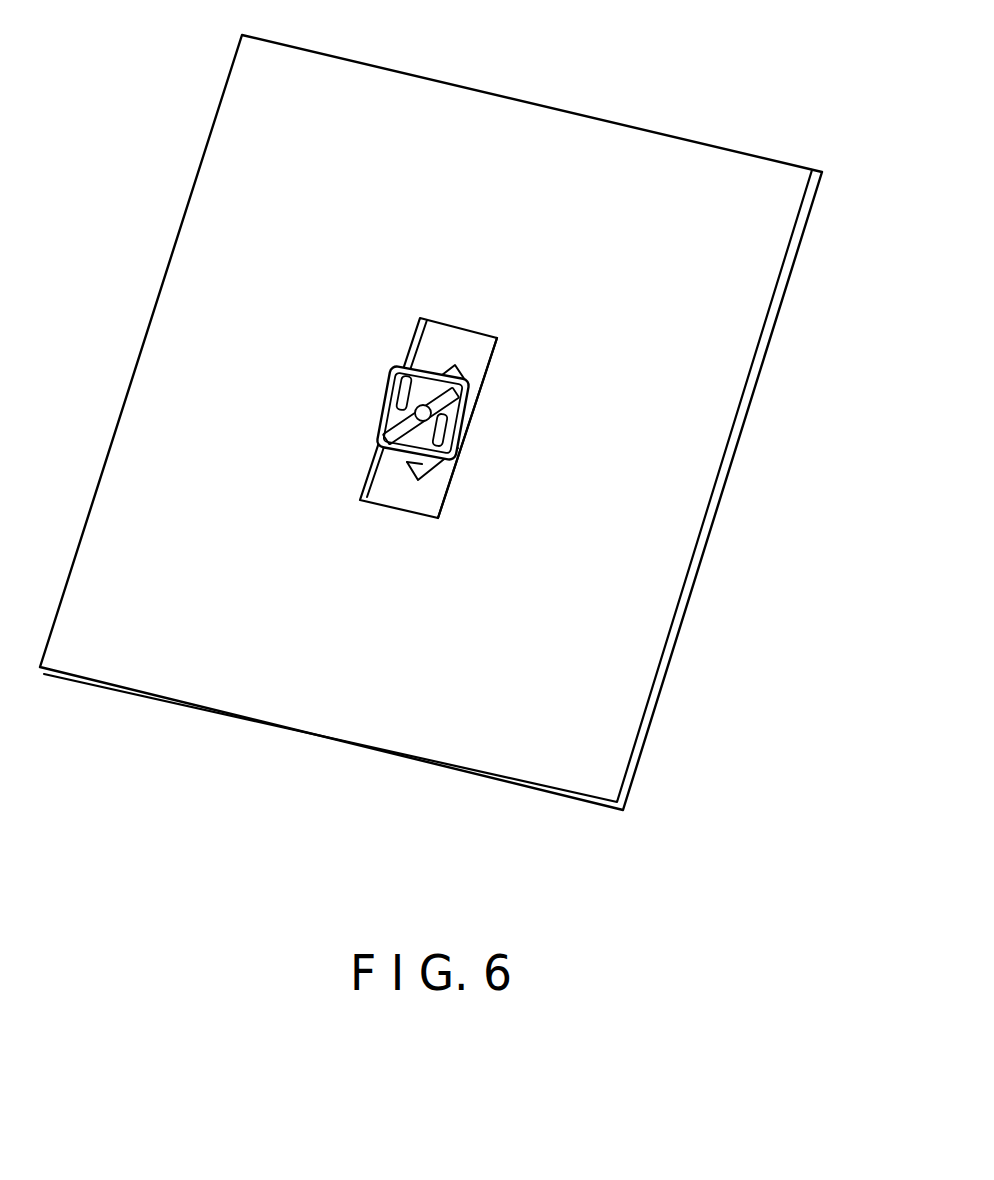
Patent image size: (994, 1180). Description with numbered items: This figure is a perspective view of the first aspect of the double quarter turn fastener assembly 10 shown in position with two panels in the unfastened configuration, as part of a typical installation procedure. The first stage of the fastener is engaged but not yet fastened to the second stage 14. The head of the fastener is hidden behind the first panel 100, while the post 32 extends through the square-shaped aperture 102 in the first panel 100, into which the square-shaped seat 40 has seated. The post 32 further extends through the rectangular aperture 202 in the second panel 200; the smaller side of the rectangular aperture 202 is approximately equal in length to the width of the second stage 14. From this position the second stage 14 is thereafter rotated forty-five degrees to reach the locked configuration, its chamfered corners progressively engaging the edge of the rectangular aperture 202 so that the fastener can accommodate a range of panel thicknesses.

The fastener assembly 10 is at (428, 390).
The second stage 14 is at (462, 423).
The post 32 is at (420, 408).
The square-shaped seat 40 is at (420, 463).
The first panel 100 is at (444, 338).
The square-shaped aperture 102 is at (410, 462).
The second panel 200 is at (743, 183).
The rectangular aperture 202 is at (490, 367).